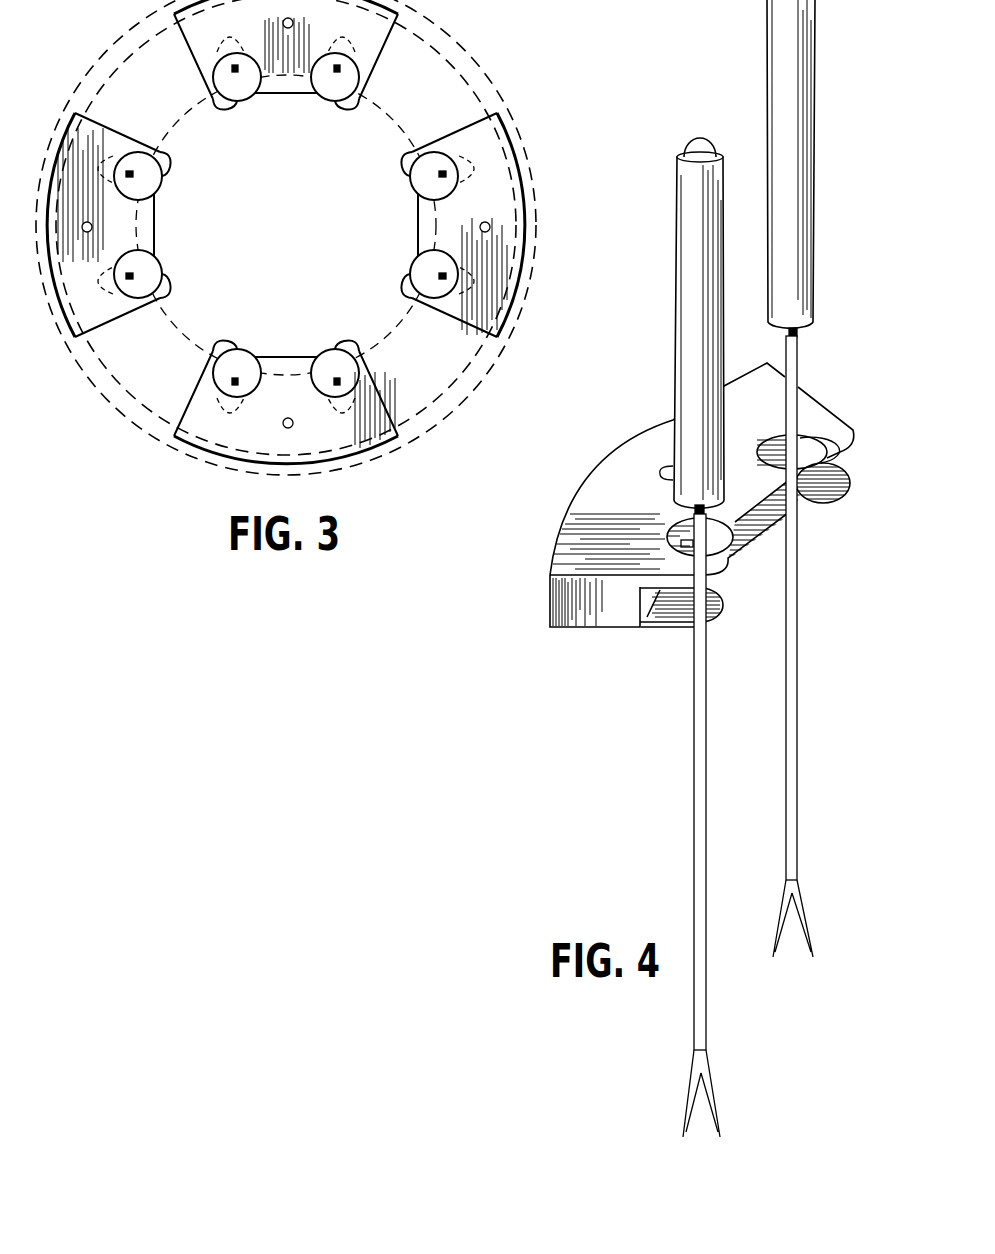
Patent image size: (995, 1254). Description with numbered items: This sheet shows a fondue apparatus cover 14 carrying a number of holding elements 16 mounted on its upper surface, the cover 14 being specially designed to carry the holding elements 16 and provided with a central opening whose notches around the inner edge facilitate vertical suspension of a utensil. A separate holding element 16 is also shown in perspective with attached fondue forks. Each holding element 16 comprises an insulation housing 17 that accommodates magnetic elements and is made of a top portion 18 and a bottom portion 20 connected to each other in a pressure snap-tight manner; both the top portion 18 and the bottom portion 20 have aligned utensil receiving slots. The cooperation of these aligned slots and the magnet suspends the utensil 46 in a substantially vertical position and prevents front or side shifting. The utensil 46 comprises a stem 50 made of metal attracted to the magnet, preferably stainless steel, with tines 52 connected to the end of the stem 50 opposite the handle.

In FIG. 3, the cover 14 is at (143, 387).
In FIG. 3, the holding element 16 is at (367, 47).
In FIG. 4, the insulation housing 17 is at (644, 515).
In FIG. 4, the top portion 18 is at (582, 528).
In FIG. 4, the bottom portion 20 is at (582, 627).
In FIG. 4, the utensil 46 is at (777, 68).
In FIG. 4, the stem 50 is at (798, 673).
In FIG. 4, the tines 52 is at (803, 925).